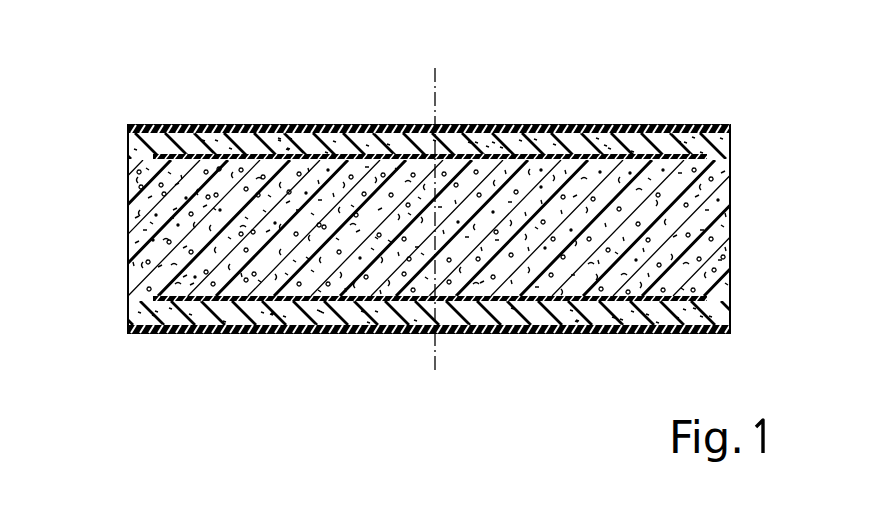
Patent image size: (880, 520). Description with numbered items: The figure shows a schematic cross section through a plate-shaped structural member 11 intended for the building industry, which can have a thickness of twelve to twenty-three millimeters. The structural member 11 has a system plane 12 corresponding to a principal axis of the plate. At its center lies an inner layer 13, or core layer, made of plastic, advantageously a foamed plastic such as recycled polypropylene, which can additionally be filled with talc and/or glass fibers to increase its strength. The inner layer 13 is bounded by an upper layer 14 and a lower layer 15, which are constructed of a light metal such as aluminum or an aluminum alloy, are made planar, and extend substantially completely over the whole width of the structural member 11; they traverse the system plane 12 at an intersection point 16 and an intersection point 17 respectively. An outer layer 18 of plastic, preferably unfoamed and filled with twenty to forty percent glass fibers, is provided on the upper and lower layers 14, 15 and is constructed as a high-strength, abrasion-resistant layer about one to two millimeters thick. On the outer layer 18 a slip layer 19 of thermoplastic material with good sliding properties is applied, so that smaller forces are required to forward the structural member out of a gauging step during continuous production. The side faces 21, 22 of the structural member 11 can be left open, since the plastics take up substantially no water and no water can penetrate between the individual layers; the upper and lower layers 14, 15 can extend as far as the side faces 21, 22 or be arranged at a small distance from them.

The plate-shaped structural member 11 is at (525, 97).
The system plane 12 is at (432, 95).
The inner layer 13 is at (318, 302).
The upper layer 14 is at (634, 145).
The lower layer 15 is at (533, 319).
The intersection point 16 is at (446, 152).
The intersection point 17 is at (423, 316).
The outer layer 18 is at (289, 125).
The slip layer 19 is at (156, 125).
The side face 21 is at (730, 195).
The side face 22 is at (128, 191).